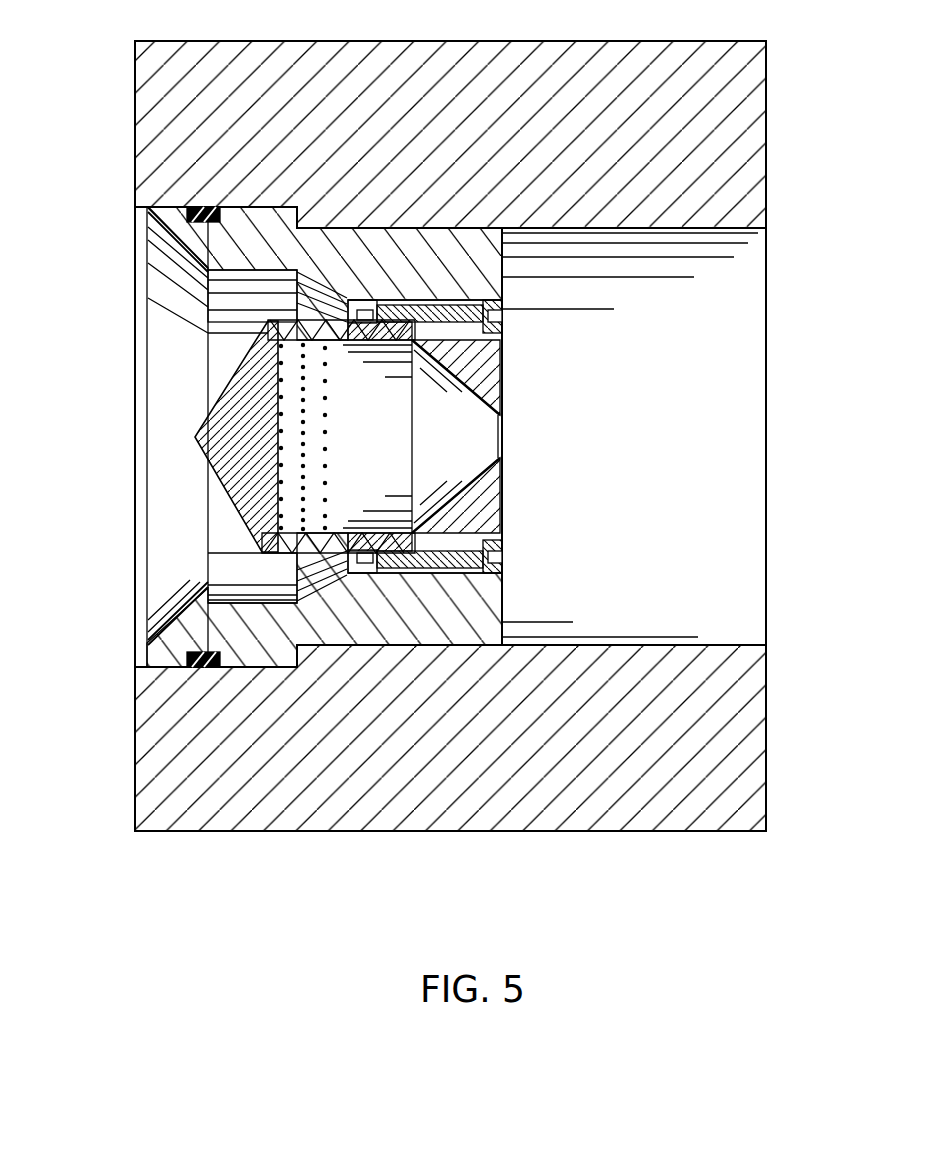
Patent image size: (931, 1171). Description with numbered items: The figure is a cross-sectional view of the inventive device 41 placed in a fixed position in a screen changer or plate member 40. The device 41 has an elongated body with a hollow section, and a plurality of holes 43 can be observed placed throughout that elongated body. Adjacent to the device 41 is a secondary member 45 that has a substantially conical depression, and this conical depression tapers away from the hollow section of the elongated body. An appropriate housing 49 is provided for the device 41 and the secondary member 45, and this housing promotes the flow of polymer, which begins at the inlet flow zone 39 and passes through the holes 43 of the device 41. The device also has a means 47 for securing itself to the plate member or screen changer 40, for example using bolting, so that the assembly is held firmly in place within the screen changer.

The screen changer or plate member 40 is at (327, 318).
The inlet flow zone 39 is at (222, 351).
The housing 49 is at (163, 288).
The device 41 is at (240, 407).
The plurality of holes 43 is at (328, 460).
The secondary member 45 is at (457, 482).
The means for securing 47 is at (502, 316).